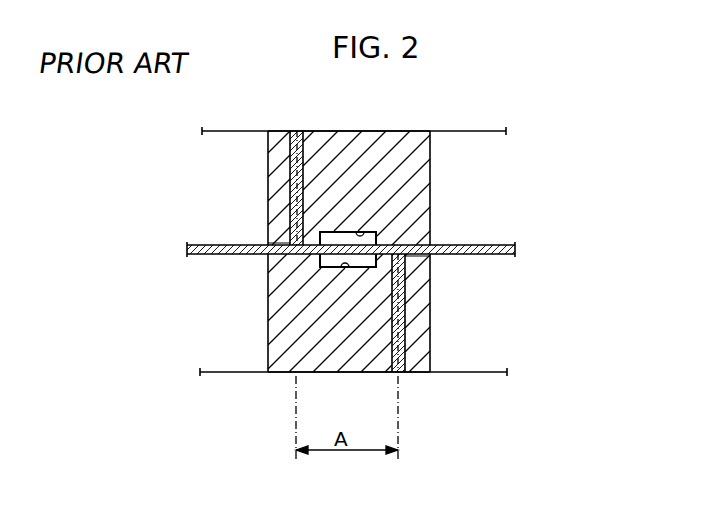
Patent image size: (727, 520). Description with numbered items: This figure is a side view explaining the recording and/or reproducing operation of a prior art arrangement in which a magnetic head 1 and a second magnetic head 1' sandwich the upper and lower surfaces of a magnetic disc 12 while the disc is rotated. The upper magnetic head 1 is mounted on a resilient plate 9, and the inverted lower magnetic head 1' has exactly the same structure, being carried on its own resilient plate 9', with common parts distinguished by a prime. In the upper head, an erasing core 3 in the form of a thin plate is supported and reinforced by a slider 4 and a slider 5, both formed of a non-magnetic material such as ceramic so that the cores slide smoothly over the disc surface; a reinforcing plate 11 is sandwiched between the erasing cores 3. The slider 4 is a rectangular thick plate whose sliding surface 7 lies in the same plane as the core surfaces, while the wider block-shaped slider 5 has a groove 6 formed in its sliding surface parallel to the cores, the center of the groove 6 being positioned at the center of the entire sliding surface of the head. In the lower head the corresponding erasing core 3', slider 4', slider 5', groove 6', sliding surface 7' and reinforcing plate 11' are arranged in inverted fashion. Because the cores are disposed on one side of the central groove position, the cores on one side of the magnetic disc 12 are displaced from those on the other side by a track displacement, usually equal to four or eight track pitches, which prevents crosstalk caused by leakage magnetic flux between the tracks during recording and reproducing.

The magnetic head 1 is at (319, 188).
The magnetic head 1' is at (372, 313).
The erasing core 3 is at (280, 171).
The erasing core 3' is at (408, 331).
The slider 4 is at (256, 170).
The slider 4' is at (428, 331).
The slider 5 is at (366, 171).
The slider 5' is at (330, 331).
The groove 6 is at (394, 211).
The groove 6' is at (304, 280).
The sliding surface 7 is at (261, 227).
The sliding surface 7' is at (442, 273).
The resilient plate 9 is at (354, 116).
The resilient plate 9' is at (353, 388).
The reinforcing plate 11 is at (310, 170).
The reinforcing plate 11' is at (372, 330).
The magnetic disc 12 is at (207, 256).